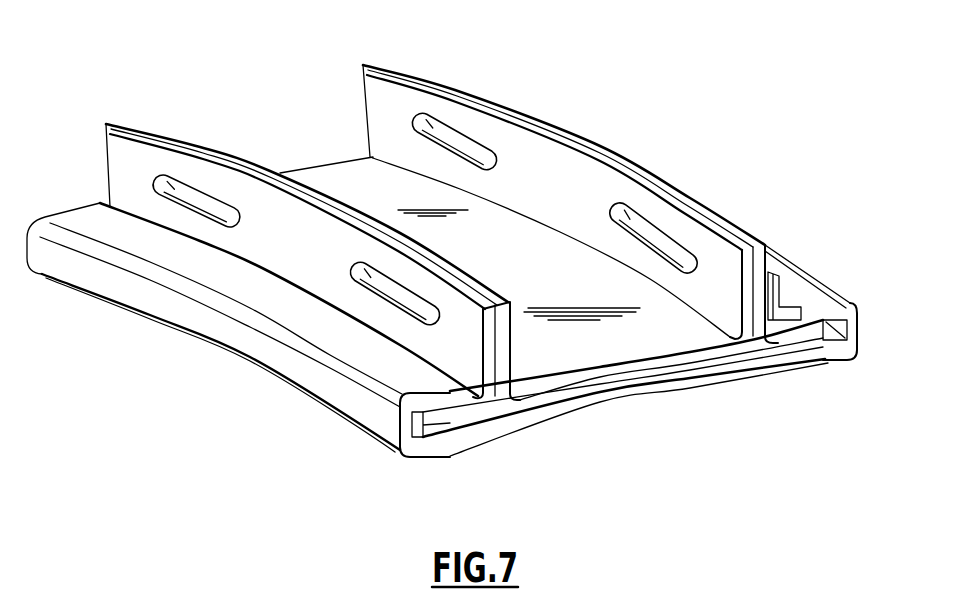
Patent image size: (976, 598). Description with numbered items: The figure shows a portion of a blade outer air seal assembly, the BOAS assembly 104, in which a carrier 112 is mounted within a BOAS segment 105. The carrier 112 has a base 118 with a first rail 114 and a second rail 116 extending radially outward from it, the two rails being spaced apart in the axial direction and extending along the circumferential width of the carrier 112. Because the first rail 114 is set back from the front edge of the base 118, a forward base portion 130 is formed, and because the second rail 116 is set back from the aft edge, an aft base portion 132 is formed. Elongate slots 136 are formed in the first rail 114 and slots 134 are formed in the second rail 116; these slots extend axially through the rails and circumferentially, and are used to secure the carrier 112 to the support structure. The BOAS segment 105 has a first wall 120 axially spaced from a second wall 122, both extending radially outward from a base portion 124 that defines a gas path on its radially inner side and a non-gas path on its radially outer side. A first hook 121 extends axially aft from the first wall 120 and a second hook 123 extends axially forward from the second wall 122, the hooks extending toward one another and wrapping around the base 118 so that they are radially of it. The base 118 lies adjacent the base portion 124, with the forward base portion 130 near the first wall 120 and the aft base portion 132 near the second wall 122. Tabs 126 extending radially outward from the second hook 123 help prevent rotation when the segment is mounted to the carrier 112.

The BOAS assembly 104 is at (742, 103).
The BOAS segment 105 is at (635, 400).
The carrier 112 is at (330, 164).
The first rail 114 is at (138, 122).
The second rail 116 is at (396, 72).
The base 118 is at (557, 388).
The first wall 120 is at (401, 428).
The first hook 121 is at (433, 403).
The second wall 122 is at (857, 328).
The second hook 123 is at (830, 320).
The base portion 124 is at (707, 385).
The tabs 126 is at (772, 293).
The forward base portion 130 is at (452, 418).
The aft base portion 132 is at (793, 343).
The slots 134 is at (457, 147).
The slots 136 is at (156, 178).